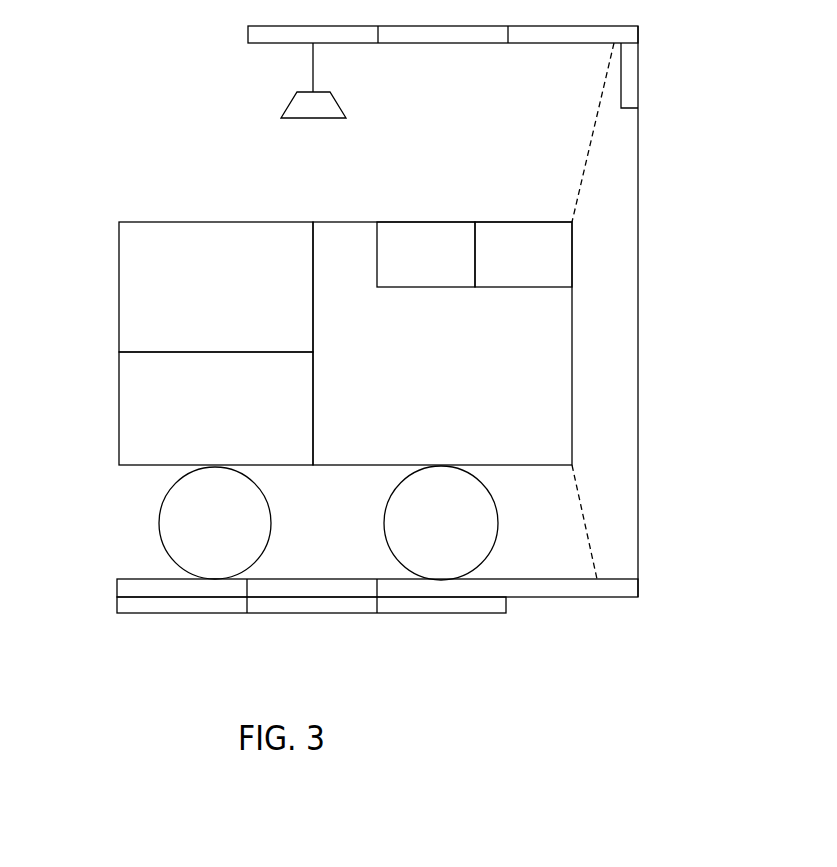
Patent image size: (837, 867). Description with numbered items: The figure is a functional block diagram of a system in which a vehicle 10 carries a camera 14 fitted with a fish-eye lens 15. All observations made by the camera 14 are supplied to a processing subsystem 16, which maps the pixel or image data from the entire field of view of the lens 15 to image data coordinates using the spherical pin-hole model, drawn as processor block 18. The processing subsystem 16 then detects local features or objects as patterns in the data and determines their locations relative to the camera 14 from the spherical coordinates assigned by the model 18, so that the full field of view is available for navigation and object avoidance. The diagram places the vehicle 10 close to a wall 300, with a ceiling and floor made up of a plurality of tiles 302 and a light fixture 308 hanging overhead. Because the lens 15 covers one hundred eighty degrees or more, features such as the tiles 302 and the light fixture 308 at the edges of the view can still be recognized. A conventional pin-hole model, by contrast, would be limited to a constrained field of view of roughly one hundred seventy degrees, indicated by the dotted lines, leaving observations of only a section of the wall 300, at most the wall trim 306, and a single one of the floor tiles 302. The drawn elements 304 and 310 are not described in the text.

The vehicle 10 is at (365, 356).
The camera 14 is at (427, 222).
The fish-eye lens 15 is at (523, 222).
The processing subsystem 16 is at (217, 222).
The spherical pin-hole model 18 is at (118, 408).
The wall 300 is at (729, 311).
The floor tiles and ceiling tiles 302 is at (571, 598).
The ceiling 304 is at (572, 43).
The wall trim 306 is at (637, 75).
The light fixture 308 is at (312, 118).
The field of view boundary 310 is at (655, 311).